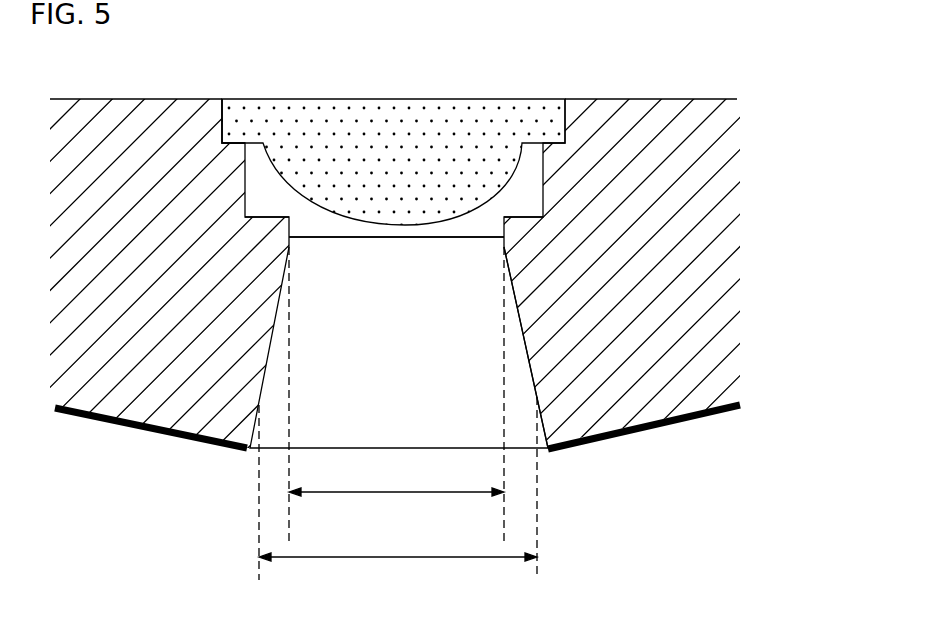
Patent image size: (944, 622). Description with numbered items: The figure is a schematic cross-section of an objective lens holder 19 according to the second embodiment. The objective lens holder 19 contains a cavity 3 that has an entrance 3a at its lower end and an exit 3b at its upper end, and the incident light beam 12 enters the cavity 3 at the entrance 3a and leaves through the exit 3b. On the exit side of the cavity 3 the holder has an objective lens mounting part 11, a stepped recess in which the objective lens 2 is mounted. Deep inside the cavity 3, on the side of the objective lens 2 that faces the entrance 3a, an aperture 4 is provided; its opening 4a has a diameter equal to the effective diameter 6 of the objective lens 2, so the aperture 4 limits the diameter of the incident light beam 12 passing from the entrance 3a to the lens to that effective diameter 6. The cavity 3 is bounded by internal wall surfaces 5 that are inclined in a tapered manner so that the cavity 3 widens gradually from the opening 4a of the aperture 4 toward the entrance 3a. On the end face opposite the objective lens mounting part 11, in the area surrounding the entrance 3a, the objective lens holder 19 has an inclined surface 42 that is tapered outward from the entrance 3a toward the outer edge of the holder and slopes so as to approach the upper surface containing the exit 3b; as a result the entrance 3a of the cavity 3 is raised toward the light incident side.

The objective lens 2 is at (454, 102).
The cavity 3 is at (530, 383).
The entrance 3a is at (530, 378).
The exit 3b is at (233, 121).
The aperture 4 is at (522, 213).
The opening 4a is at (503, 226).
The internal wall surfaces 5 is at (507, 285).
The effective diameter 6 is at (453, 493).
The objective lens mounting part 11 is at (246, 186).
The incident light beam 12 is at (455, 558).
The objective lens holder 19 is at (661, 106).
The inclined surface 42 is at (98, 422).